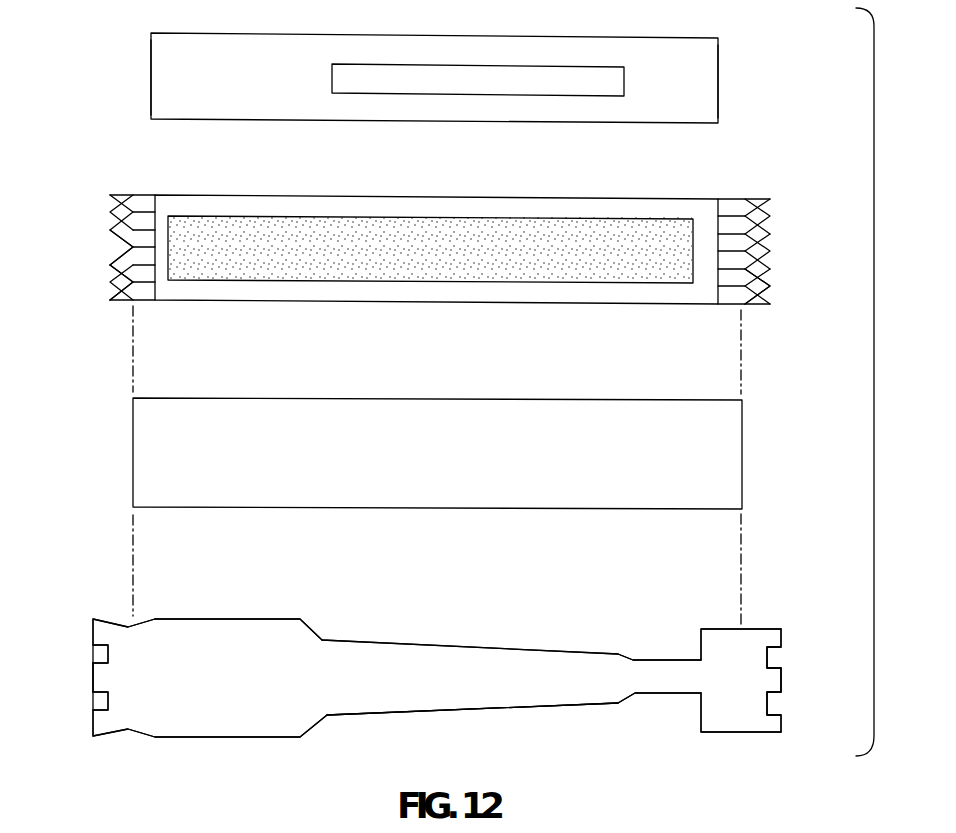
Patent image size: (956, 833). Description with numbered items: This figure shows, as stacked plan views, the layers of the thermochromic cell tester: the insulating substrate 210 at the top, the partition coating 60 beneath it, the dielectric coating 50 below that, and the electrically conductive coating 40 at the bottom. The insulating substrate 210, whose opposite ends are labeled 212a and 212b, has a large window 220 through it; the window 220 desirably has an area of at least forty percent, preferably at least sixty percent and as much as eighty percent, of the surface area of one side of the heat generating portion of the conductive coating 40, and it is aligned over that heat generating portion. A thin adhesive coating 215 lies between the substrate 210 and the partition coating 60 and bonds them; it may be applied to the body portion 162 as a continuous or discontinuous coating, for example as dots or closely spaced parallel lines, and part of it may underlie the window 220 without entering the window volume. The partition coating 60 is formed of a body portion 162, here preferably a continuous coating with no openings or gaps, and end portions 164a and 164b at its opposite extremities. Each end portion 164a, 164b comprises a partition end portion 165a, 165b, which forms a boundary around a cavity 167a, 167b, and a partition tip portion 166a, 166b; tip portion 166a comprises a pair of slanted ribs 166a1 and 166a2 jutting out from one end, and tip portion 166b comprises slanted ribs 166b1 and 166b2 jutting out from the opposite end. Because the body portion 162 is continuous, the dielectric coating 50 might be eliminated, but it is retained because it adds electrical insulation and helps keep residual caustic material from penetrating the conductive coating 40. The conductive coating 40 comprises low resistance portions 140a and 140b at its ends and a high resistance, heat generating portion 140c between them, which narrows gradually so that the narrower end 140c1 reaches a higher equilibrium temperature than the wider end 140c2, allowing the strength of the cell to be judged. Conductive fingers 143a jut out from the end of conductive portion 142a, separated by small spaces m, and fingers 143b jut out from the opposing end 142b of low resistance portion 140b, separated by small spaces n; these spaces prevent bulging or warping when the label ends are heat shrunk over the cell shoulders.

The conductive coating 40 is at (590, 652).
The dielectric coating 50 is at (376, 398).
The partition coating 60 is at (523, 197).
The low resistance portion 140a is at (262, 619).
The low resistance portion 140b is at (722, 629).
The high resistance portion 140c is at (428, 644).
The narrower end 140c1 is at (585, 704).
The wider end 140c2 is at (412, 711).
The conductive portion 142a is at (110, 620).
The right end of shuttle 142b is at (770, 629).
The conductive fingers 143a is at (93, 679).
The fingers 143b is at (781, 680).
The small spaces m is at (96, 658).
The small spaces n is at (777, 658).
The body portion 162 is at (423, 217).
The end portion 164a is at (110, 200).
The end portion 164b is at (765, 205).
The partition end portion 165a is at (112, 252).
The partition end portion 165b is at (770, 240).
The partition tip portion 166a is at (100, 200).
The slanted rib 166a1 is at (105, 212).
The slanted rib 166a2 is at (96, 292).
The partition tip portion 166b is at (778, 207).
The slanted rib 166b1 is at (780, 215).
The slanted rib 166b2 is at (770, 302).
The cavity 167a is at (112, 285).
The cavity 167b is at (760, 268).
The insulating substrate 210 is at (268, 120).
The cover plate left edge 212a is at (151, 78).
The cover plate right edge 212b is at (718, 85).
The adhesive coating 215 is at (326, 282).
The window 220 is at (565, 97).